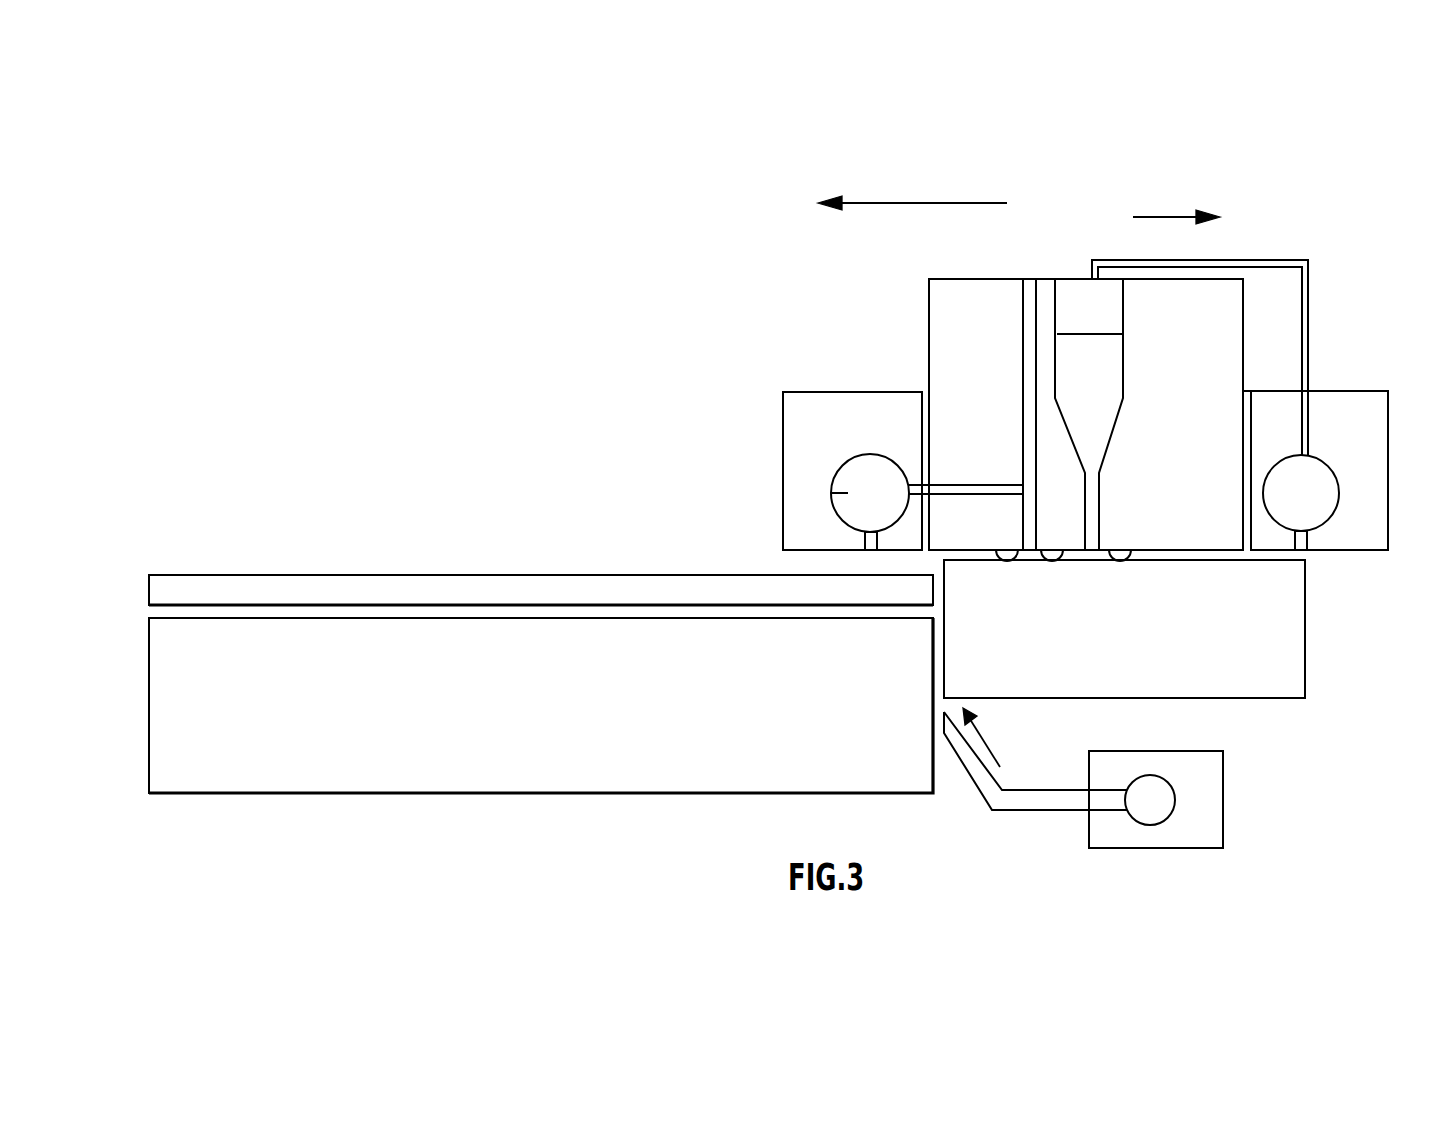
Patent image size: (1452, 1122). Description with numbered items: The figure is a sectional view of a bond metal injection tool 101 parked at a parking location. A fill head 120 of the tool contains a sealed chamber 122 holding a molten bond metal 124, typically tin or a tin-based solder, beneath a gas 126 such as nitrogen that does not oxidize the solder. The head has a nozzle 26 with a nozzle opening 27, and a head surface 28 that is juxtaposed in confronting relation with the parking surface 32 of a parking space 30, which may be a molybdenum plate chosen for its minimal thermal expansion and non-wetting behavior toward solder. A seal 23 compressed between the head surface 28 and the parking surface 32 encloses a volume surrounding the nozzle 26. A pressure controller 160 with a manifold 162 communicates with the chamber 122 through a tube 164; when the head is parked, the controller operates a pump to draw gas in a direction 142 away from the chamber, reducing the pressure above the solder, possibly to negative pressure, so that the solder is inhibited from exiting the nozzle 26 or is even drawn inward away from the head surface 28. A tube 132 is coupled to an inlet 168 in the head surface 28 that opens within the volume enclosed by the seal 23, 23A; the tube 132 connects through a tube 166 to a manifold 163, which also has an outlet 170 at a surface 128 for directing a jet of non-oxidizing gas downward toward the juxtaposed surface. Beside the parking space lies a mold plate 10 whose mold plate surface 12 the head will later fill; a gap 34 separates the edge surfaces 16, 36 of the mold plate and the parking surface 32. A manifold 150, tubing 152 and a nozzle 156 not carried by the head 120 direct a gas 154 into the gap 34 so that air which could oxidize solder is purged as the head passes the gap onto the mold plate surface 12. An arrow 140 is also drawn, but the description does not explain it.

The mold plate 10 is at (149, 586).
The mold plate surface 12 is at (262, 575).
The edge surface of the mold plate 16 is at (930, 602).
The seal 23 is at (1052, 560).
The seal 23A is at (1007, 560).
The nozzle 26 is at (1099, 523).
The nozzle opening 27 is at (1093, 552).
The head surface 28 is at (1195, 550).
The parking space 30 is at (1287, 657).
The parking surface 32 is at (1220, 560).
The gap 34 is at (937, 562).
The edge surface of the parking surface 36 is at (944, 642).
The bond metal injection tool 101 is at (1247, 233).
The fill head 120 is at (1204, 479).
The sealed chamber 122 is at (1073, 248).
The molten bond metal 124 is at (1112, 400).
The gas 126 is at (1110, 308).
The surface 128 is at (798, 551).
The tube 132 is at (1023, 400).
The web travel direction 140 is at (875, 203).
The direction 142 is at (1178, 217).
The manifold 150 is at (1165, 803).
The tubing 152 is at (972, 790).
The gas 154 is at (992, 740).
The nozzle 156 is at (920, 726).
The pressure controller 160 is at (1370, 418).
The manifold 162 is at (1313, 492).
The manifold 163 is at (848, 492).
The tube 164 is at (1308, 260).
The tube 166 is at (990, 485).
The inlet 168 is at (1021, 574).
The outlet 170 is at (862, 540).